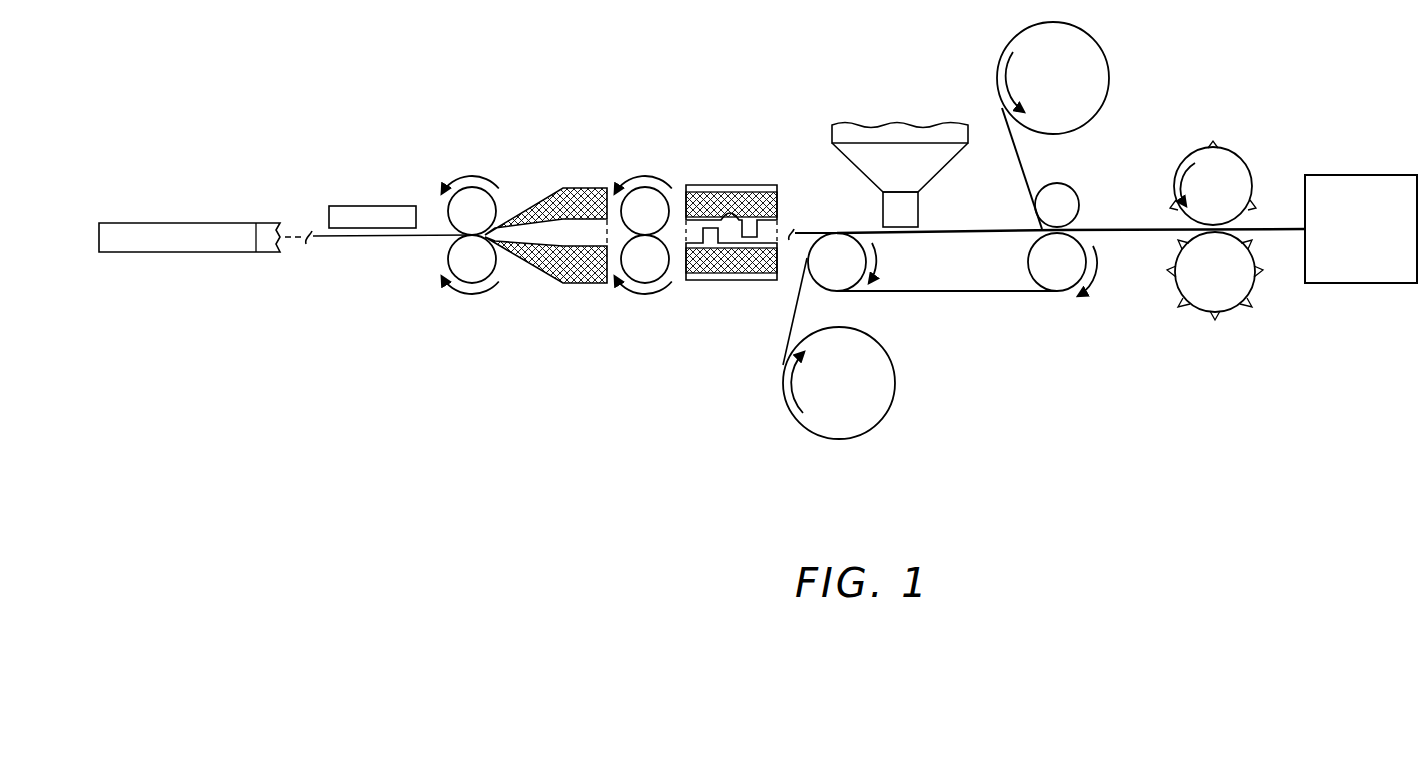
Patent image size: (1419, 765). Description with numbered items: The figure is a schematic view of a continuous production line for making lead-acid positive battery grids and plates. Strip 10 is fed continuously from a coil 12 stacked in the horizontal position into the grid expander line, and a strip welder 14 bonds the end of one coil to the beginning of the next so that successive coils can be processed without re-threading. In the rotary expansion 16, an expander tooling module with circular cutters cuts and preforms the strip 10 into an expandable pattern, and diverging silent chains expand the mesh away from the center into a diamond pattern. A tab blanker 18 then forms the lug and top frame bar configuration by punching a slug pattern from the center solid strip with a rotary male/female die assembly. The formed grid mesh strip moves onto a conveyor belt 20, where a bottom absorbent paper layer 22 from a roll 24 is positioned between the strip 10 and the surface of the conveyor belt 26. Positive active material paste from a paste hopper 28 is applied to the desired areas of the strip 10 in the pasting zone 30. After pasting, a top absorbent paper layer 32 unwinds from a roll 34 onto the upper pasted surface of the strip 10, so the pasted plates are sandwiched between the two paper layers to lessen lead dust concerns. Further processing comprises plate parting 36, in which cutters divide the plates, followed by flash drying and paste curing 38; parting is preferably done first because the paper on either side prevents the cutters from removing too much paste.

The strip 10 is at (365, 238).
The coil 12 is at (205, 254).
The strip welder 14 is at (380, 205).
The rotary expansion 16 is at (570, 184).
The tab blanker 18 is at (746, 182).
The conveyor belt 20 is at (1010, 292).
The bottom absorbent paper layer 22 is at (791, 330).
The roll 24 is at (896, 378).
The surface of the conveyor belt 26 is at (866, 231).
The paste hopper 28 is at (905, 123).
The pasting zone 30 is at (910, 242).
The top absorbent paper layer 32 is at (1022, 160).
The roll 34 is at (1108, 45).
The plate parting 36 is at (1241, 158).
The flash drying and paste curing 38 is at (1383, 175).